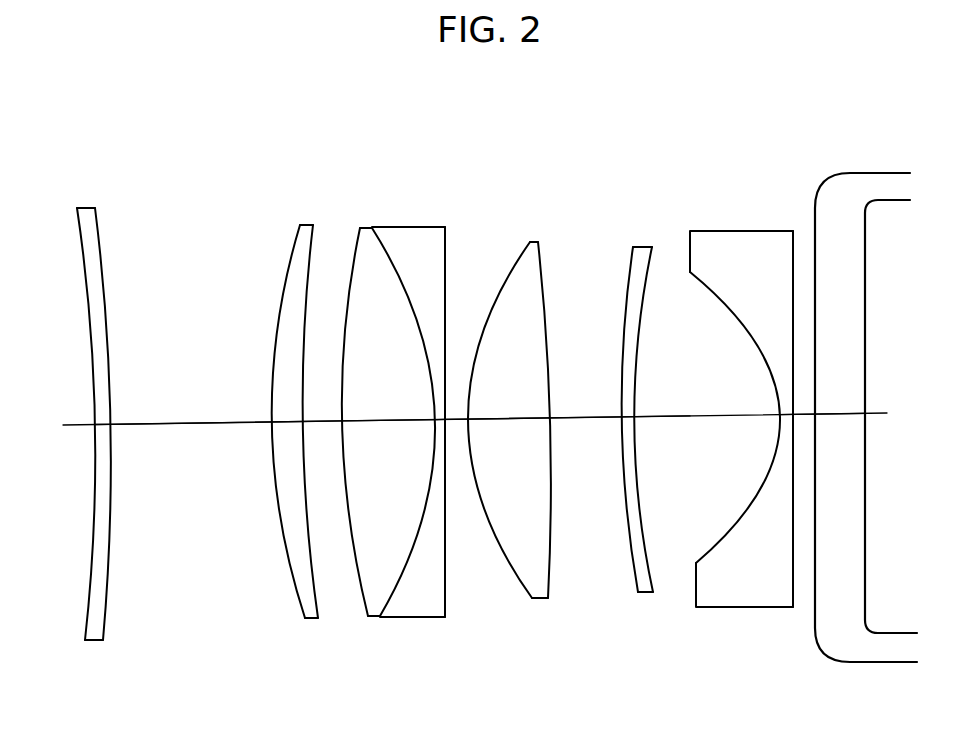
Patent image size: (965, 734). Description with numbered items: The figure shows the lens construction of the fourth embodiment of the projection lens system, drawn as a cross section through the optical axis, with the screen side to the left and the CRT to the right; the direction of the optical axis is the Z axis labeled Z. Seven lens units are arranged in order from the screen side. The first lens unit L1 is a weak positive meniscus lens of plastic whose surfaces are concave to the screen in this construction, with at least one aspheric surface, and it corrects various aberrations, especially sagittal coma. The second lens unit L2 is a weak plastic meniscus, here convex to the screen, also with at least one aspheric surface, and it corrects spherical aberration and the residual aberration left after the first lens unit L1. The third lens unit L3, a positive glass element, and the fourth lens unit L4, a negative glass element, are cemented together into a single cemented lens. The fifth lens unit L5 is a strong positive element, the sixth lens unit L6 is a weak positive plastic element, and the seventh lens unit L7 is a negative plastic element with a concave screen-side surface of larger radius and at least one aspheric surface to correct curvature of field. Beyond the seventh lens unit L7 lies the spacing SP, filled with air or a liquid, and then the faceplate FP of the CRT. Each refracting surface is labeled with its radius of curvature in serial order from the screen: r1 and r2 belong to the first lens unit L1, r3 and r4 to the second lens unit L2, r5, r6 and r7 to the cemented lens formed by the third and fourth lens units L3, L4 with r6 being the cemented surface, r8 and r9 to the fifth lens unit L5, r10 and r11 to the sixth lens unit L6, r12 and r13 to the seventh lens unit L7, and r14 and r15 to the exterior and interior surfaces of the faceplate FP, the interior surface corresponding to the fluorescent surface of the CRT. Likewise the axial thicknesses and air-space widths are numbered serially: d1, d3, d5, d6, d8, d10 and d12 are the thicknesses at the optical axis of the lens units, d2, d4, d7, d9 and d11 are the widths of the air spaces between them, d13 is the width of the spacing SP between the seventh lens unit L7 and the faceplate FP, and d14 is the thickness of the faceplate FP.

The first lens unit L1 is at (91, 417).
The second lens unit L2 is at (304, 417).
The third lens unit L3 is at (386, 417).
The fourth lens unit L4 is at (429, 417).
The fifth lens unit L5 is at (531, 417).
The sixth lens unit L6 is at (651, 417).
The seventh lens unit L7 is at (744, 417).
The spacing SP is at (800, 232).
The faceplate FP is at (863, 408).
The Z-axis Z is at (880, 413).
The thickness at the optical axis of the first lens d1 is at (100, 424).
The width of the air space between the first and second lenses d2 is at (204, 423).
The thickness at the optical axis of the second lens d3 is at (283, 422).
The width of the air space between the second and third lenses d4 is at (317, 421).
The thickness at the optical axis of the third lens d5 is at (385, 420).
The thickness at the optical axis of the fourth lens d6 is at (440, 421).
The width of the air space between the fourth and fifth lenses d7 is at (453, 420).
The thickness at the optical axis of the fifth lens d8 is at (503, 420).
The width of the air space between the fifth and sixth lenses d9 is at (578, 420).
The thickness at the optical axis of the sixth lens d10 is at (623, 422).
The width of the air space between the sixth and seventh lenses d11 is at (669, 418).
The thickness at the optical axis of the seventh lens d12 is at (788, 418).
The width of the spacing between the seventh lens and the faceplate d13 is at (800, 415).
The thickness at the optical axis of the faceplate d14 is at (836, 418).
The radius of curvature of the first lens surface r1 is at (92, 606).
The radius of curvature of the second lens surface r2 is at (105, 597).
The radius of curvature of the third lens surface r3 is at (292, 585).
The radius of curvature of the fourth lens surface r4 is at (316, 592).
The radius of curvature of the fifth lens surface r5 is at (365, 588).
The radius of curvature of the sixth lens surface r6 is at (395, 583).
The radius of curvature of the seventh lens surface r7 is at (447, 592).
The radius of curvature of the eighth lens surface r8 is at (527, 588).
The radius of curvature of the ninth lens surface r9 is at (549, 575).
The radius of curvature of the tenth lens surface r10 is at (642, 580).
The radius of curvature of the eleventh lens surface r11 is at (653, 572).
The radius of curvature of the twelfth lens surface r12 is at (710, 550).
The radius of curvature of the thirteenth lens surface r13 is at (799, 565).
The radius of curvature of the exterior surface of the faceplate r14 is at (818, 596).
The radius of curvature of the interior surface of the faceplate r15 is at (868, 595).